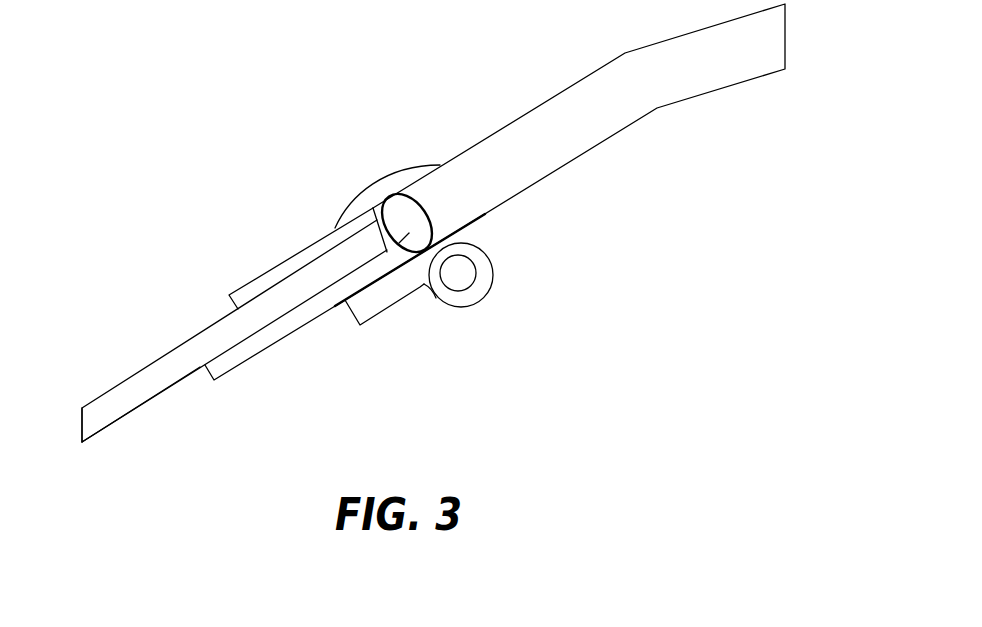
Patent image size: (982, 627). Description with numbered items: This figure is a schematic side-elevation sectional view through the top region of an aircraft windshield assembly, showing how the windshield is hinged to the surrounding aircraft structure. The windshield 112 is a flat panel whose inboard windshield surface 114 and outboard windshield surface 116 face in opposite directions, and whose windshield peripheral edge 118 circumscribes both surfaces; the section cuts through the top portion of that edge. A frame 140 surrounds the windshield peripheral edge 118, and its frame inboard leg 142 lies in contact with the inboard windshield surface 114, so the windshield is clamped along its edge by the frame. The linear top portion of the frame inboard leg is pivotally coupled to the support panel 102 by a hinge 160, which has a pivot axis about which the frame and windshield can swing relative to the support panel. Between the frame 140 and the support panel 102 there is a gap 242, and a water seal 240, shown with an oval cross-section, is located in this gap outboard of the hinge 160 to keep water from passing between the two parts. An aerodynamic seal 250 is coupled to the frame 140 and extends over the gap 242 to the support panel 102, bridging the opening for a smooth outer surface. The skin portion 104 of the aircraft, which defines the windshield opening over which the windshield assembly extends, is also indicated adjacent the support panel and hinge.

The support panel 102 is at (602, 89).
The skin portion 104 is at (440, 268).
The windshield 112 is at (148, 380).
The inboard windshield surface 114 is at (118, 420).
The outboard windshield surface 116 is at (102, 395).
The windshield peripheral edge 118 is at (358, 243).
The frame 140 is at (257, 277).
The frame inboard leg 142 is at (227, 367).
The hinge 160 is at (493, 276).
The water seal 240 is at (393, 243).
The gap 242 is at (426, 267).
The aerodynamic seal 250 is at (415, 170).